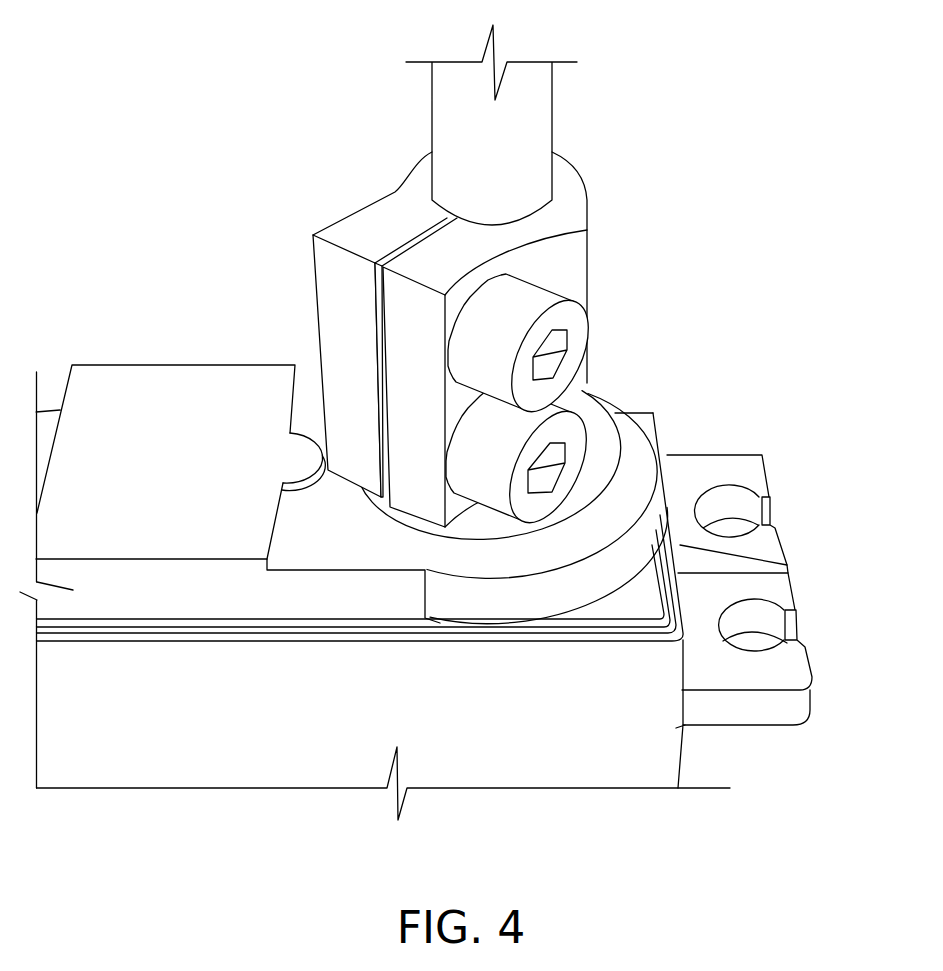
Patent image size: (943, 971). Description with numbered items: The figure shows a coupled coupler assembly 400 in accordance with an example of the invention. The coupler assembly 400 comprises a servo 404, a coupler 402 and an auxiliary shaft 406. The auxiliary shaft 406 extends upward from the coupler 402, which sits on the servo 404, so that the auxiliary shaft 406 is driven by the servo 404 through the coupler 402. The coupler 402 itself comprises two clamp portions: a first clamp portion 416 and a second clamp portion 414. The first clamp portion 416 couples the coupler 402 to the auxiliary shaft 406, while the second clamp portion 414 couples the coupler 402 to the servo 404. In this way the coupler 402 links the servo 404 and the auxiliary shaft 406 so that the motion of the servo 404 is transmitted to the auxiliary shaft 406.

The coupler assembly 400 is at (768, 128).
The coupler 402 is at (352, 228).
The servo 404 is at (668, 467).
The auxiliary shaft 406 is at (432, 113).
The second clamp portion 414 is at (490, 492).
The first clamp portion 416 is at (513, 274).